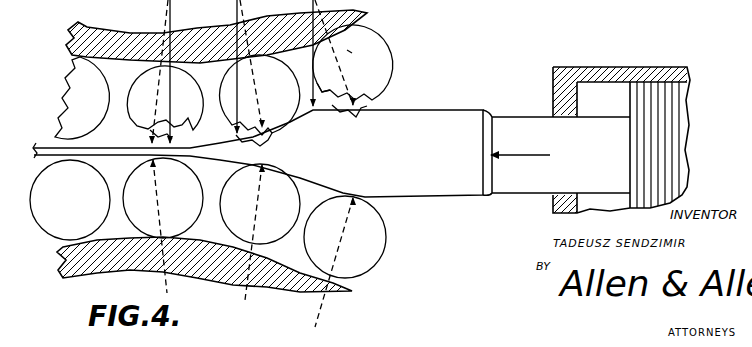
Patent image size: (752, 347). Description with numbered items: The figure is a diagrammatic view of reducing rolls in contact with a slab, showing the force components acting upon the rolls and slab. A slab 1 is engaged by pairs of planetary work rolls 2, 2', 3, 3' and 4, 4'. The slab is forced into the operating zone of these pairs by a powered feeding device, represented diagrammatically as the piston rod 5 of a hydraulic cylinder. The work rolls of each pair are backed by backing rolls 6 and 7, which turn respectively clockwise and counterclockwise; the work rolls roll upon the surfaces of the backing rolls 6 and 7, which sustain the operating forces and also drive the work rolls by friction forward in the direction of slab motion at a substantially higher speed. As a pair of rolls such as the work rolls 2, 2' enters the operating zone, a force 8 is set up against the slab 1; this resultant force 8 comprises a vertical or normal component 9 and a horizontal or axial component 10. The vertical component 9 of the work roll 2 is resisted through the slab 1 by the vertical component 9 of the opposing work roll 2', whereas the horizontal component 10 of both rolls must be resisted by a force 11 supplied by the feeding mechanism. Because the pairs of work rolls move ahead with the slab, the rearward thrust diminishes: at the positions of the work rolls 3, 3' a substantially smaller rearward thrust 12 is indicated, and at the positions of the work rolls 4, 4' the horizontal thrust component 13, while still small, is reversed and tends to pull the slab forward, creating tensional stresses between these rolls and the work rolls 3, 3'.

The slab 1 is at (447, 109).
The work roll 2 is at (364, 62).
The work roll 2' is at (361, 237).
The work roll 3 is at (260, 95).
The work roll 3' is at (260, 204).
The work roll 4 is at (165, 98).
The work roll 4' is at (163, 198).
The piston rod 5 is at (556, 152).
The backing roll 6 is at (218, 30).
The backing roll 7 is at (297, 290).
The force 8 is at (350, 250).
The vertical component 9 is at (322, 74).
The horizontal component 10 is at (358, 88).
The force 11 is at (514, 152).
The rearward thrust 12 is at (262, 120).
The horizontal thrust component 13 is at (178, 130).